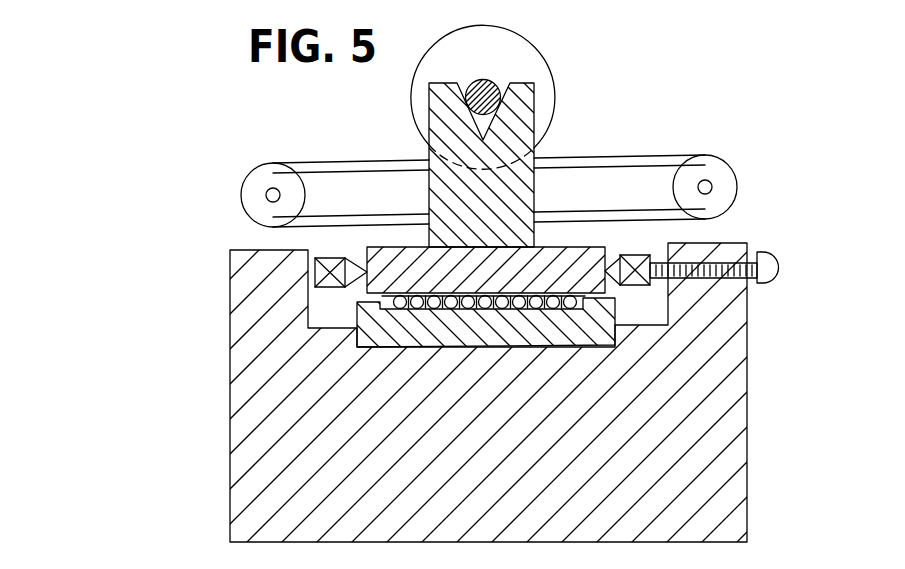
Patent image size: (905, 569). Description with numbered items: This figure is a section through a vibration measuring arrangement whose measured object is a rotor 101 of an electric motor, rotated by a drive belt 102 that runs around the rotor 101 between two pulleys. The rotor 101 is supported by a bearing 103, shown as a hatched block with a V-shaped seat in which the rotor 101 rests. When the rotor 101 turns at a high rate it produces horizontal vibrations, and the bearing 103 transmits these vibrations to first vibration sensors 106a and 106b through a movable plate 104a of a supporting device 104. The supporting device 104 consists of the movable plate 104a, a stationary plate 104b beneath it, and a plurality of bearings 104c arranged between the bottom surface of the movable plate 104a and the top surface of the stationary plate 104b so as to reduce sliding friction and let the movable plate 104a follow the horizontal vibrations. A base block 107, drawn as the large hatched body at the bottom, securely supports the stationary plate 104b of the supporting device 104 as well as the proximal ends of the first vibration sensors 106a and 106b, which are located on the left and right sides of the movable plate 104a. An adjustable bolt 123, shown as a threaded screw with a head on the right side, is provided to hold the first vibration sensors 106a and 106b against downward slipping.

The rotor 101 is at (528, 57).
The drive belt 102 is at (587, 157).
The bearing 103 is at (429, 121).
The supporting device 104 is at (105, 325).
The movable plate 104a is at (367, 293).
The stationary plate 104b is at (357, 303).
The bearings 104c is at (392, 298).
The first vibration sensor 106a is at (340, 258).
The first vibration sensor 106b is at (633, 254).
The base block 107 is at (750, 422).
The adjustable bolt 123 is at (779, 268).